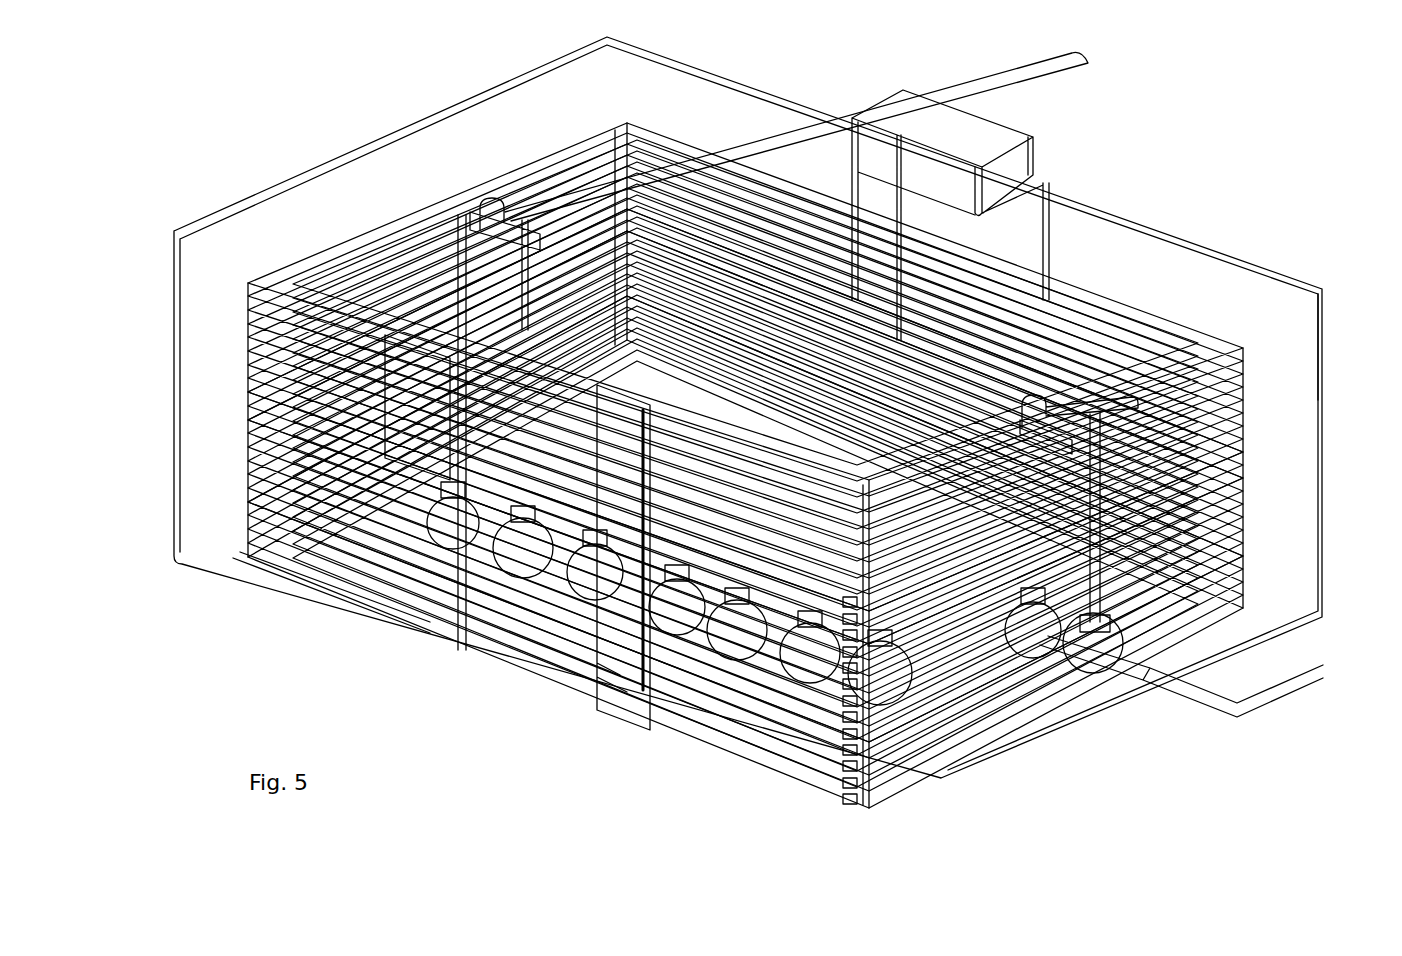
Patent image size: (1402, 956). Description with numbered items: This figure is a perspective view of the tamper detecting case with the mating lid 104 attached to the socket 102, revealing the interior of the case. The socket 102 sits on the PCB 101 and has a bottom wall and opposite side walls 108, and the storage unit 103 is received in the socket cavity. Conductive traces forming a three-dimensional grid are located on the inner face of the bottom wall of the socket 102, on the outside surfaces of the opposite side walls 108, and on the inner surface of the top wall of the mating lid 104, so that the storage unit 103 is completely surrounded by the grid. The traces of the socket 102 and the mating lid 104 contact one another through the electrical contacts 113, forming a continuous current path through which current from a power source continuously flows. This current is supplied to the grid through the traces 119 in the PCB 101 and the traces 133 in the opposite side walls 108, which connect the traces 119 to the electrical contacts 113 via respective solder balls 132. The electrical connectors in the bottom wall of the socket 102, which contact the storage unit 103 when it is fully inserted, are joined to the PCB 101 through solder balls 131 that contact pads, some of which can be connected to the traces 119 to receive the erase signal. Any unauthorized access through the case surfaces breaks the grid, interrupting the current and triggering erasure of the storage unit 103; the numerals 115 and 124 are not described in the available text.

The PCB 101 is at (268, 148).
The socket 102 is at (1240, 372).
The storage unit 103 is at (250, 378).
The mating lid 104 is at (1164, 230).
The opposite side walls 108 is at (250, 425).
The electrical contacts 113 is at (1232, 407).
The housing floor 115 is at (225, 547).
The traces 119 is at (1070, 66).
The manifold block 124 is at (1048, 252).
The solder balls 131 is at (590, 595).
The solder balls 132 is at (1092, 650).
The traces 133 is at (1232, 525).